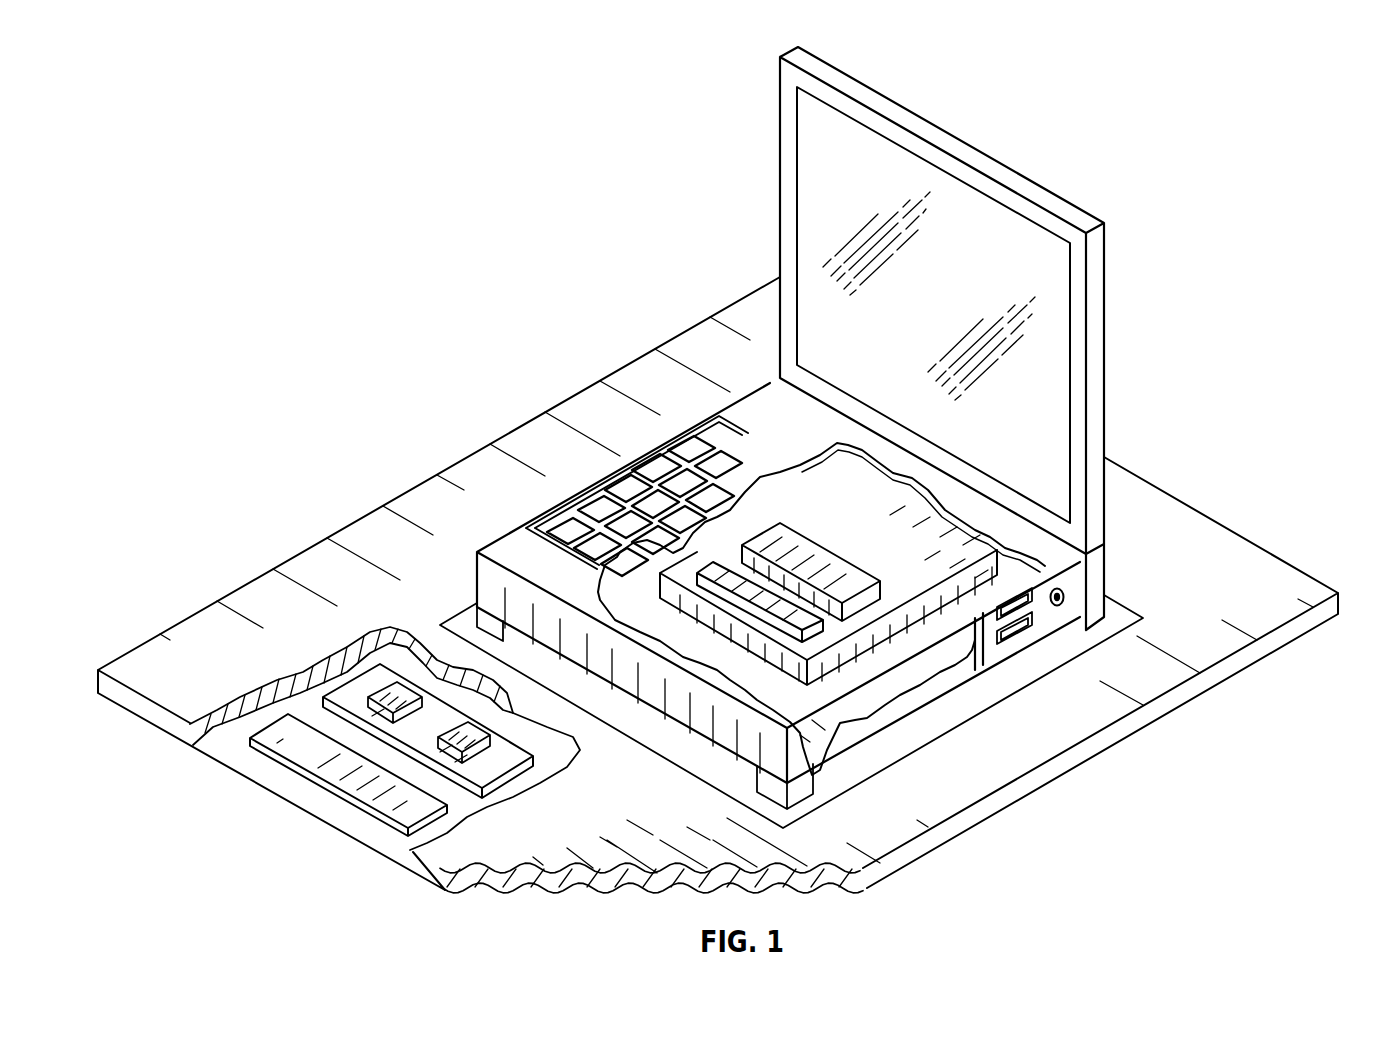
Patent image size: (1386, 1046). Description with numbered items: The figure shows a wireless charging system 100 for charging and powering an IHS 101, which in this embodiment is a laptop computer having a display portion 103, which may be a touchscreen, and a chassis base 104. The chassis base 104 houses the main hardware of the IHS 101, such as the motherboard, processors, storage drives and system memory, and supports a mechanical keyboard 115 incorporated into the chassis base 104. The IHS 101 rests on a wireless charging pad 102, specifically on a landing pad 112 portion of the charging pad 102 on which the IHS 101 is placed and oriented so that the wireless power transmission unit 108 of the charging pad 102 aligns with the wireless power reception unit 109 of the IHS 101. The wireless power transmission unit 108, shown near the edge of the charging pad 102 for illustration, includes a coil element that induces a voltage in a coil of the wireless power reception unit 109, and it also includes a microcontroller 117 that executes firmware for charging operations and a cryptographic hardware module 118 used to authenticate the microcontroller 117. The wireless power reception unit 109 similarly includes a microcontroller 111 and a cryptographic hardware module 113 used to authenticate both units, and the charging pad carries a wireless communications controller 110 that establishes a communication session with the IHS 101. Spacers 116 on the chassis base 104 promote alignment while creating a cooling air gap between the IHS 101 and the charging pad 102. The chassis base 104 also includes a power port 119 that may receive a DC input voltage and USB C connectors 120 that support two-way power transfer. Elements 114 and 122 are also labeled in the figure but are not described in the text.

The wireless charging system 100 is at (465, 132).
The IHS 101 is at (825, 172).
The wireless charging pad 102 is at (330, 532).
The display portion 103 is at (945, 222).
The chassis base 104 is at (470, 576).
The wireless power transmission unit 108 is at (347, 694).
The wireless power reception unit 109 is at (820, 487).
The wireless communications controller 110 is at (274, 742).
The microcontroller 111 is at (836, 570).
The landing pad 112 is at (690, 755).
The cryptographic hardware module 113 is at (727, 568).
The body 114 is at (838, 721).
The mechanical keyboard 115 is at (657, 471).
The spacers 116 is at (795, 784).
The microcontroller 117 is at (463, 738).
The cryptographic hardware module 118 is at (390, 692).
The power port 119 is at (1064, 595).
The USB C connectors 120 is at (1032, 632).
The pad 122 is at (1100, 600).